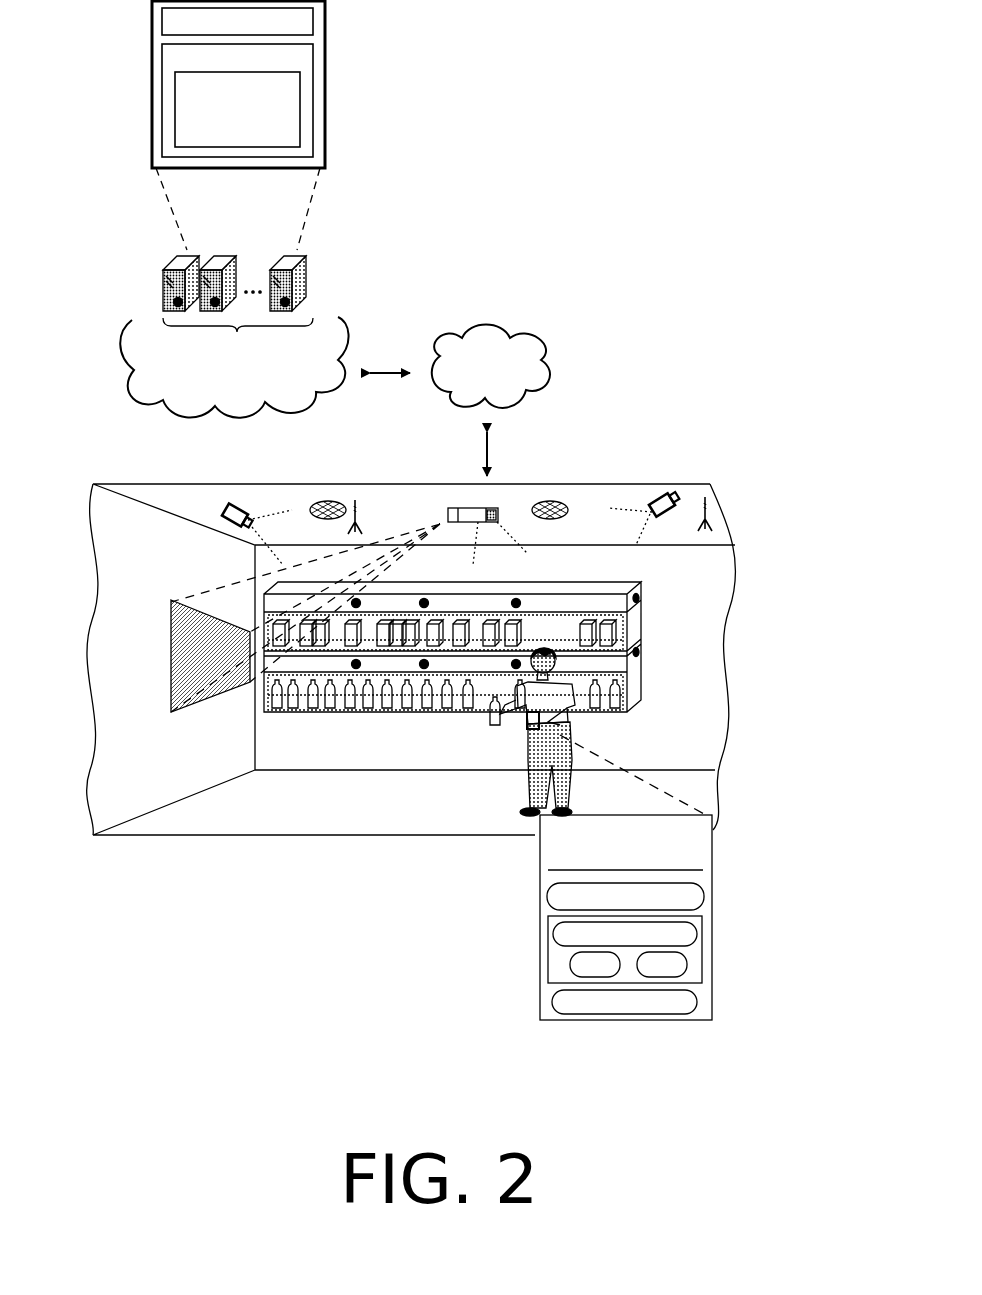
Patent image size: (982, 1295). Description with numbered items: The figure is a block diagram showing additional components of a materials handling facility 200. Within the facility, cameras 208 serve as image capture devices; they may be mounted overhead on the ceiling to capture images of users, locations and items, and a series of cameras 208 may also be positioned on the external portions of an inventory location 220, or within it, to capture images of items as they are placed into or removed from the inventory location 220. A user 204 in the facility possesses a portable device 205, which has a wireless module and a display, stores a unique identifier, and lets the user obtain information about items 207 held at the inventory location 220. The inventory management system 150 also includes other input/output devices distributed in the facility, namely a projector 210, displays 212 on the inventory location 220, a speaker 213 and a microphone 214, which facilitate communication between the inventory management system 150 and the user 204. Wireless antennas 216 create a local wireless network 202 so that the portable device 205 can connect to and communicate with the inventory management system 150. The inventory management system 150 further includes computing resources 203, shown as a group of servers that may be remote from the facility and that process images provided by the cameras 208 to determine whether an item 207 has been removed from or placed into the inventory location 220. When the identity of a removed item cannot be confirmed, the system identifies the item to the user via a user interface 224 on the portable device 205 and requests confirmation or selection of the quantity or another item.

The inventory management system 150 is at (238, 84).
The materials handling facility 200 is at (711, 484).
The network 202 is at (491, 366).
The computing resource(s) 203 is at (234, 367).
The user 204 is at (573, 722).
The portable device 205 is at (526, 733).
The item 207 is at (490, 722).
The camera 208 is at (232, 496).
The projector 210 is at (466, 507).
The display 212 is at (446, 651).
The speaker 213 is at (552, 500).
The microphone 214 is at (318, 503).
The wireless antenna 216 is at (354, 500).
The inventory location 220 is at (452, 663).
The user interface 224 is at (706, 896).